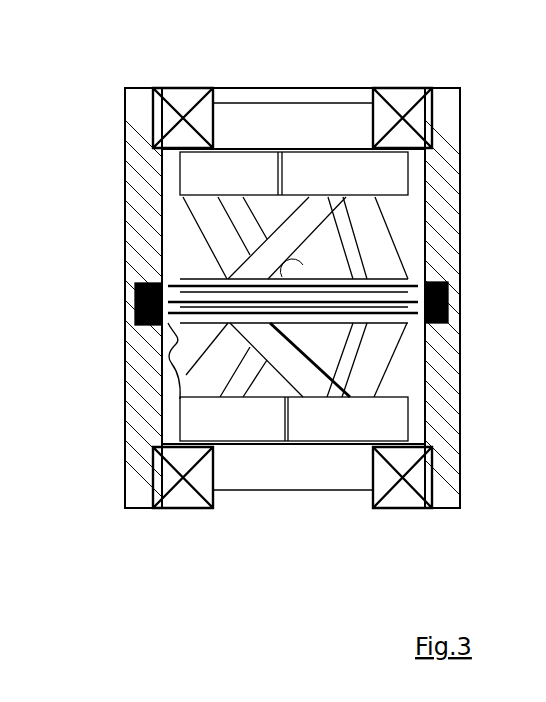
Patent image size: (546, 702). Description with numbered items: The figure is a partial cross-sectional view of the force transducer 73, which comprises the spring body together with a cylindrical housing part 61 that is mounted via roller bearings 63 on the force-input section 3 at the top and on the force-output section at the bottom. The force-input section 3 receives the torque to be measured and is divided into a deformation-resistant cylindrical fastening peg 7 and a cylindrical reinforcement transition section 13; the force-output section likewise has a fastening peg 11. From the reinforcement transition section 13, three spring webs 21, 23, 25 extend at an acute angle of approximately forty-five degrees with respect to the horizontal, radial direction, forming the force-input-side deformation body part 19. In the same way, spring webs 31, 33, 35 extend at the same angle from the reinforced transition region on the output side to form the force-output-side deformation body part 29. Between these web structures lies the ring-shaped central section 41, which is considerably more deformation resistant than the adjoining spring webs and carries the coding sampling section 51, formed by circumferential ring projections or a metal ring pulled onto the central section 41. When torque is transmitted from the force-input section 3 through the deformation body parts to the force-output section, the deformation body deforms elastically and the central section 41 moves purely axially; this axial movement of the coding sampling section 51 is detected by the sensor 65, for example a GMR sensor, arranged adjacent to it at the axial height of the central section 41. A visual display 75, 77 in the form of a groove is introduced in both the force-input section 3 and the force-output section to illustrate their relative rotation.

The force-input section 3 is at (236, 101).
The fastening peg 7 is at (352, 118).
The fastening peg 11 is at (345, 491).
The reinforcement transition section 13 is at (192, 175).
The force-input-side deformation body part 19 is at (387, 218).
The spring web 21 is at (387, 263).
The spring web 23 is at (303, 223).
The spring web 25 is at (222, 239).
The force-output-side deformation body part 29 is at (375, 367).
The spring web 31 is at (380, 377).
The spring web 33 is at (208, 380).
The spring web 35 is at (187, 377).
The central section 41 is at (255, 334).
The coding sampling section 51 is at (176, 326).
The housing part 61 is at (464, 151).
The roller bearings 63 is at (408, 98).
The sensor 65 is at (449, 303).
The force transducer 73 is at (112, 118).
The visual display 75 is at (276, 178).
The visual display 77 is at (285, 418).